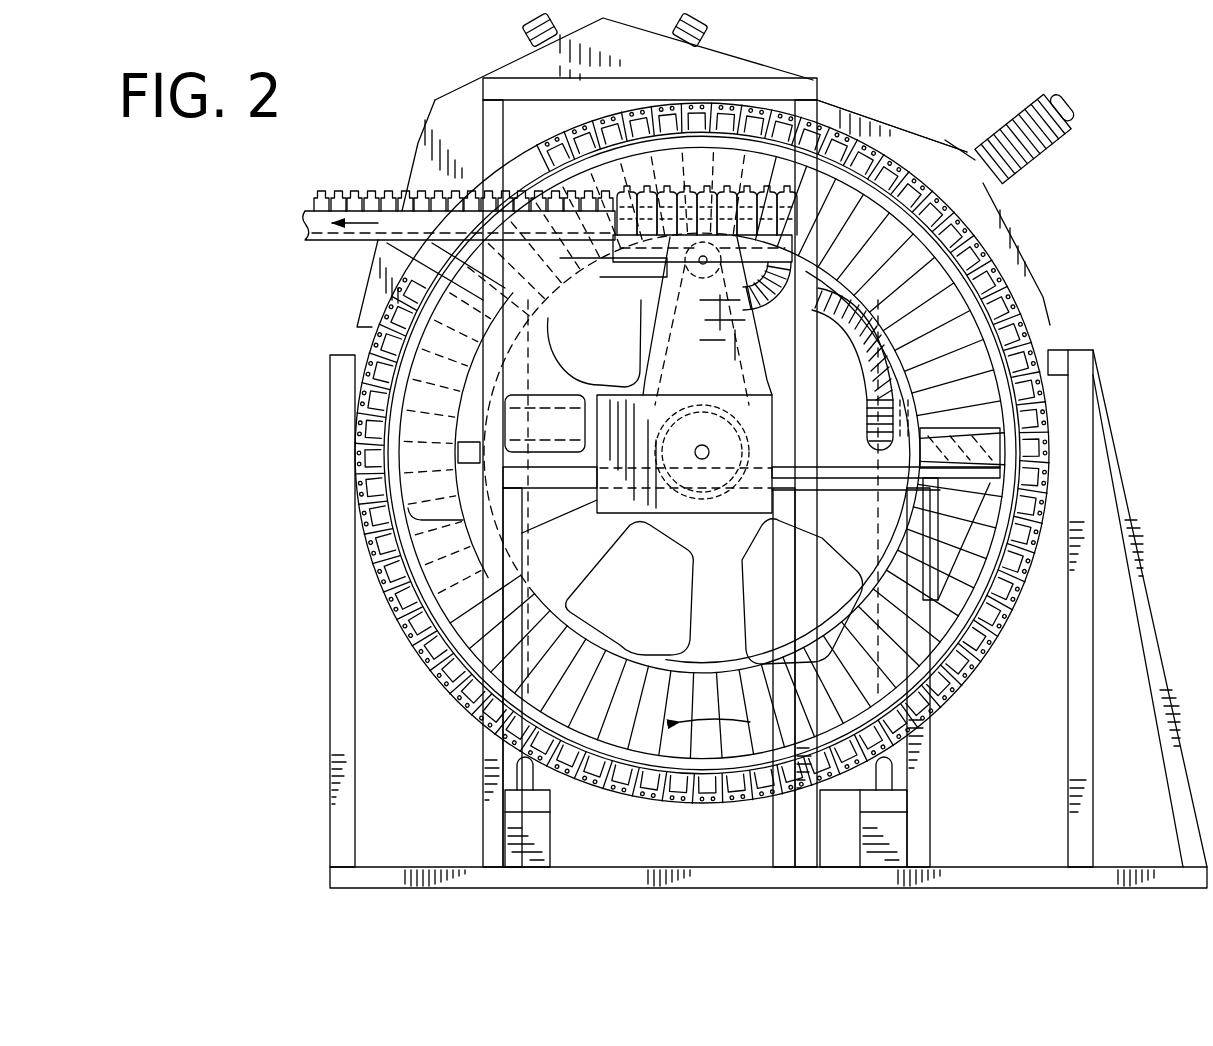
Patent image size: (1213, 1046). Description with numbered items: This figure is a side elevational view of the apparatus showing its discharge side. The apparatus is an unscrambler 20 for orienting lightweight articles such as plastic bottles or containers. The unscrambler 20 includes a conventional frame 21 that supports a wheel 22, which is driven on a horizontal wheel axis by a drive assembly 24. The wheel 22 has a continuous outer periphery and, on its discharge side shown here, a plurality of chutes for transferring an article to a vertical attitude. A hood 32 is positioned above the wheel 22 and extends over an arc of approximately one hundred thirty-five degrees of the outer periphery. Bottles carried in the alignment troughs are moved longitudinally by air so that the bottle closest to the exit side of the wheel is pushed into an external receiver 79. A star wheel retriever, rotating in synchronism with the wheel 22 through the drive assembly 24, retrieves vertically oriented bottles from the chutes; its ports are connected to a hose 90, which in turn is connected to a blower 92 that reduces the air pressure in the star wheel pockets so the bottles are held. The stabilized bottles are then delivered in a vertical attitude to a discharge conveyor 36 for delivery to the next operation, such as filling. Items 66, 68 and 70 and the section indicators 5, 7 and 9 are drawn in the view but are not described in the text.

The unscrambler 20 is at (452, 89).
The frame 21 is at (324, 690).
The wheel 22 is at (364, 345).
The drive assembly 24 is at (652, 289).
The hood 32 is at (891, 117).
The discharge conveyor 36 is at (328, 241).
The bottle cap 66 is at (522, 38).
The bottle cap 68 is at (708, 30).
The nozzle 70 is at (1040, 105).
The external receiver 79 is at (1050, 483).
The hose 90 is at (955, 280).
The blower 92 is at (918, 433).
The section line 5 is at (662, 648).
The section line 7 is at (302, 160).
The section line 9 is at (690, 57).